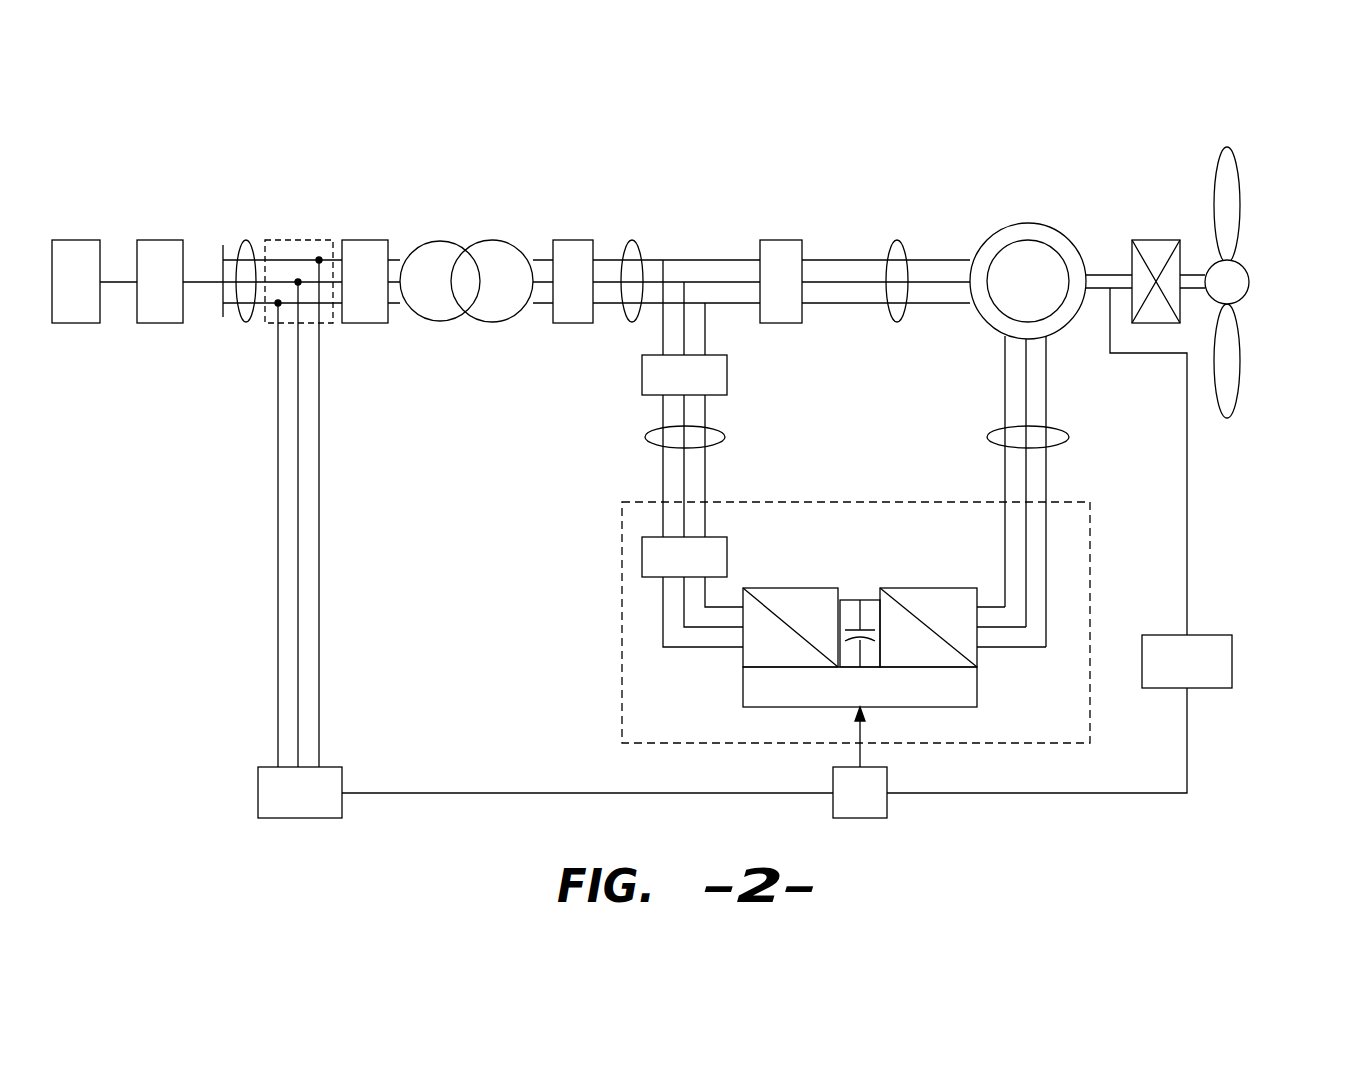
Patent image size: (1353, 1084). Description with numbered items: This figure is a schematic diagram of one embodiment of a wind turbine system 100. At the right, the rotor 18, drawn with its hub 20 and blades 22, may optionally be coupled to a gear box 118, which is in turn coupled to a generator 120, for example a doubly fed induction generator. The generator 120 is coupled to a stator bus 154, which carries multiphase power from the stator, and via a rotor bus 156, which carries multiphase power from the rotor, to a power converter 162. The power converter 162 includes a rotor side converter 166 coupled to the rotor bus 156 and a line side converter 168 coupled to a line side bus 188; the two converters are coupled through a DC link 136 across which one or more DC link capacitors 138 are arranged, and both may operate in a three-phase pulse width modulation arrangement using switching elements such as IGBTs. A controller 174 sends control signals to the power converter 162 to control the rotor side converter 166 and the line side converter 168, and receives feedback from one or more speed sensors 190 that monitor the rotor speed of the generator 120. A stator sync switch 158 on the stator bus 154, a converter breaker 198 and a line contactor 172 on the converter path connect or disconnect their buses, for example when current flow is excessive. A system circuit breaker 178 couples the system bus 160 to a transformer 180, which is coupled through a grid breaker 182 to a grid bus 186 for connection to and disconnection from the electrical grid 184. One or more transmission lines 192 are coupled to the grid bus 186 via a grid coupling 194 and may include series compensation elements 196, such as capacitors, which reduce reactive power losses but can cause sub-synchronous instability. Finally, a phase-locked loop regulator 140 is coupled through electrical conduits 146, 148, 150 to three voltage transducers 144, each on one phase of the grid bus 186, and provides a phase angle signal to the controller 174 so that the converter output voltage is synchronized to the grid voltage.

The rotor 18 is at (1270, 175).
The hub 20 is at (1250, 278).
The rotor blade 22 is at (1240, 215).
The wind turbine system 100 is at (428, 162).
The gear box 118 is at (1158, 240).
The generator 120 is at (1028, 223).
The DC link 136 is at (865, 600).
The DC link capacitors 138 is at (847, 617).
The phase-locked loop regulator 140 is at (545, 792).
The voltage transducers 144 is at (307, 240).
The electrical conduit 146 is at (278, 590).
The electrical conduit 148 is at (298, 546).
The electrical conduit 150 is at (319, 498).
The stator bus 154 is at (900, 240).
The rotor bus 156 is at (1070, 437).
The stator sync switch 158 is at (781, 240).
The system bus 160 is at (633, 240).
The power converter 162 is at (1090, 592).
The rotor side converter 166 is at (978, 657).
The line side converter 168 is at (742, 657).
The line contactor 172 is at (642, 557).
The controller 174 is at (887, 805).
The system circuit breaker 178 is at (575, 240).
The transformer 180 is at (492, 240).
The grid breaker 182 is at (365, 240).
The electrical grid 184 is at (78, 240).
The grid bus 186 is at (247, 250).
The line side bus 188 is at (643, 447).
The speed sensors 190 is at (1059, 540).
The transmission lines 192 is at (118, 285).
The grid coupling 194 is at (223, 262).
The series compensation elements 196 is at (160, 240).
The converter breaker 198 is at (642, 380).